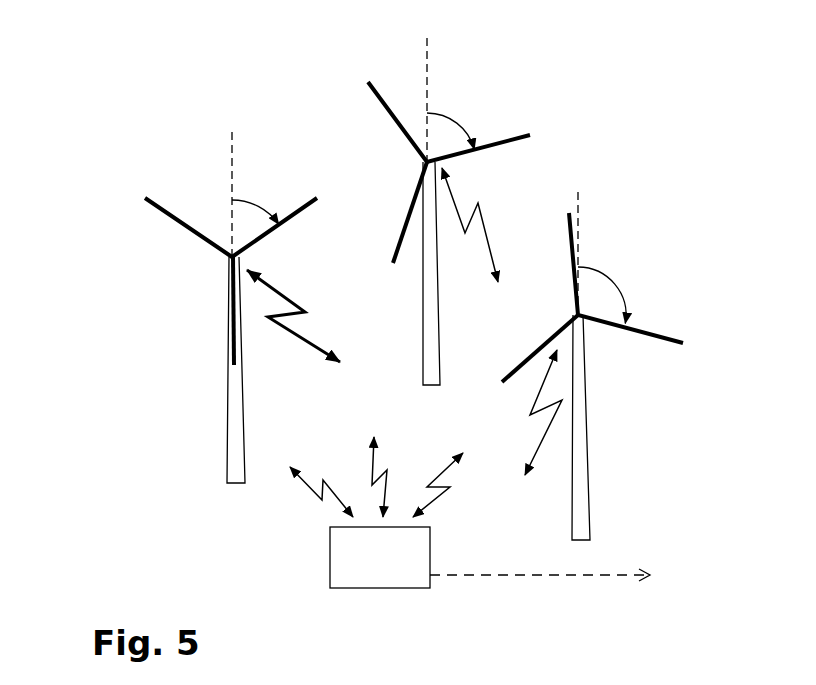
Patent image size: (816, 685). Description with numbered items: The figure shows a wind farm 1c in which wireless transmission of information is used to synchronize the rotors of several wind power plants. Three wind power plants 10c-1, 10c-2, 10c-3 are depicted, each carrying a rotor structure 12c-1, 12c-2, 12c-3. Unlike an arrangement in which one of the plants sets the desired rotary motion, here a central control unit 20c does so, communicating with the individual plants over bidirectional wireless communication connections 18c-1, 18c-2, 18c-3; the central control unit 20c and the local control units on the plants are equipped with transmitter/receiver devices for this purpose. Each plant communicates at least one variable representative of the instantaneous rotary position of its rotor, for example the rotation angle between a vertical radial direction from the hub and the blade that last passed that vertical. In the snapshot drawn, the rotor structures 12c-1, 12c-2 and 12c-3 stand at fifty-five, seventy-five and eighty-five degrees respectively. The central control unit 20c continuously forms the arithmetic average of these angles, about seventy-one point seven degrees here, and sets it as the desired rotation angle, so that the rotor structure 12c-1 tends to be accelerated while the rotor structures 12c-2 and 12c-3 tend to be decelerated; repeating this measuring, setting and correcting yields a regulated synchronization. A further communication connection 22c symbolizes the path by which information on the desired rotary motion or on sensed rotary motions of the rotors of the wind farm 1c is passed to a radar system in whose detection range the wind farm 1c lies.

The wind farm 1c is at (116, 113).
The wind power plant 10c-1 is at (231, 308).
The wind power plant 10c-2 is at (460, 211).
The wind power plant 10c-3 is at (592, 361).
The rotor structure 12c-1 is at (195, 223).
The rotor structure 12c-2 is at (502, 127).
The rotor structure 12c-3 is at (592, 248).
The wireless communication connection 18c-1 is at (287, 292).
The wireless communication connection 18c-2 is at (490, 227).
The wireless communication connection 18c-3 is at (522, 408).
The central control unit 20c is at (403, 571).
The communication connection 22c is at (477, 573).